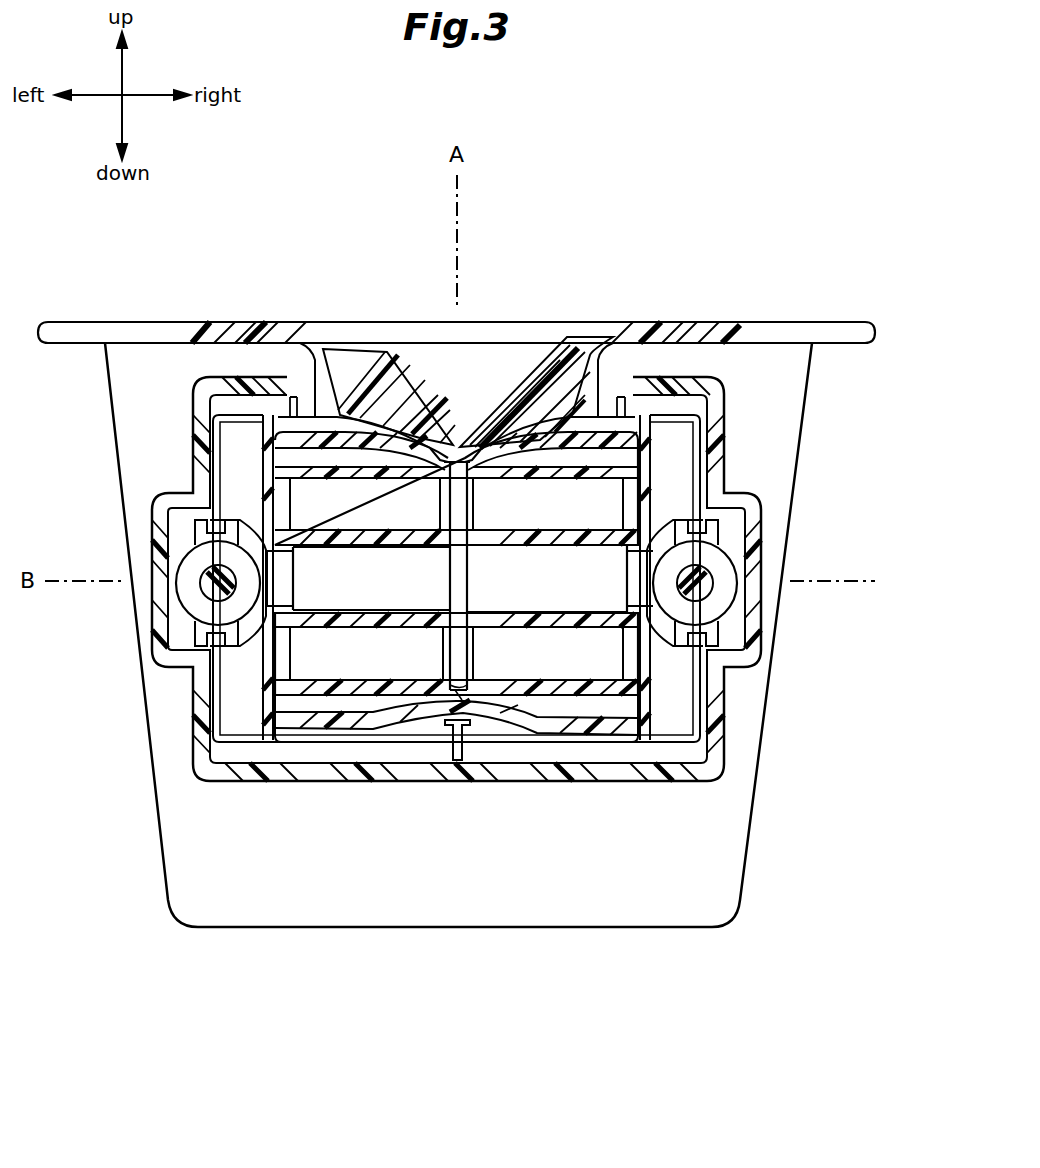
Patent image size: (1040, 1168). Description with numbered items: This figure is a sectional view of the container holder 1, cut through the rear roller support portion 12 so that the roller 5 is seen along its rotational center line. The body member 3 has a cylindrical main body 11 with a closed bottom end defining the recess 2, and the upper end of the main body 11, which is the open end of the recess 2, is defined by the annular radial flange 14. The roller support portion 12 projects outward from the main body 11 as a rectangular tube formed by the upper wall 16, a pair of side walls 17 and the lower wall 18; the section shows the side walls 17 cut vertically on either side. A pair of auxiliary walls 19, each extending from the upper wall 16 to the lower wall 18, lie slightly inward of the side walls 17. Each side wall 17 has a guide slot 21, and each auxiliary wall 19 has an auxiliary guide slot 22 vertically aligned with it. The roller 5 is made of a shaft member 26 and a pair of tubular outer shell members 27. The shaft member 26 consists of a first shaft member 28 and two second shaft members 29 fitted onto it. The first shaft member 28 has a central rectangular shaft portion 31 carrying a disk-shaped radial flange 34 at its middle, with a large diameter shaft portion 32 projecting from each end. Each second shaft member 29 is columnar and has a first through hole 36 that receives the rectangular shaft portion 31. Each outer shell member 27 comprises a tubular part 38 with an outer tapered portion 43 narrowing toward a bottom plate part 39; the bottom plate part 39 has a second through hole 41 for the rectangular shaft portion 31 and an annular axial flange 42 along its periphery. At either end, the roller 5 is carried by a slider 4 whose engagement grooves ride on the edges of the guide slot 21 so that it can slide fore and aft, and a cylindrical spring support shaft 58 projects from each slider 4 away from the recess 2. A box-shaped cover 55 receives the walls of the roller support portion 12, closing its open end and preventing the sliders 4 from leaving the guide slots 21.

The container holder 1 is at (722, 210).
The recess 2 is at (459, 345).
The body member 3 is at (620, 928).
The slider 4 is at (195, 532).
The roller 5 is at (638, 508).
The main body 11 is at (302, 928).
The roller support portion 12 is at (403, 745).
The annular radial flange 14 is at (68, 335).
The upper wall 16 is at (312, 420).
The side wall 17 is at (193, 700).
The lower wall 18 is at (452, 762).
The auxiliary wall 19 is at (265, 742).
The guide slot 21 is at (193, 612).
The auxiliary guide slot 22 is at (248, 742).
The shaft member 26 is at (310, 742).
The outer shell member 27 is at (348, 722).
The first shaft member 28 is at (369, 592).
The second shaft member 29 is at (317, 478).
The rectangular shaft portion 31 is at (398, 556).
The large diameter shaft portion 32 is at (267, 558).
The disk-shaped radial flange 34 is at (450, 590).
The first through hole 36 is at (512, 548).
The tubular part 38 is at (580, 435).
The bottom plate part 39 is at (475, 685).
The second through hole 41 is at (475, 660).
The annular axial flange 42 is at (468, 445).
The outer tapered portion 43 is at (440, 430).
The cover 55 is at (618, 782).
The spring support shaft 58 is at (212, 578).